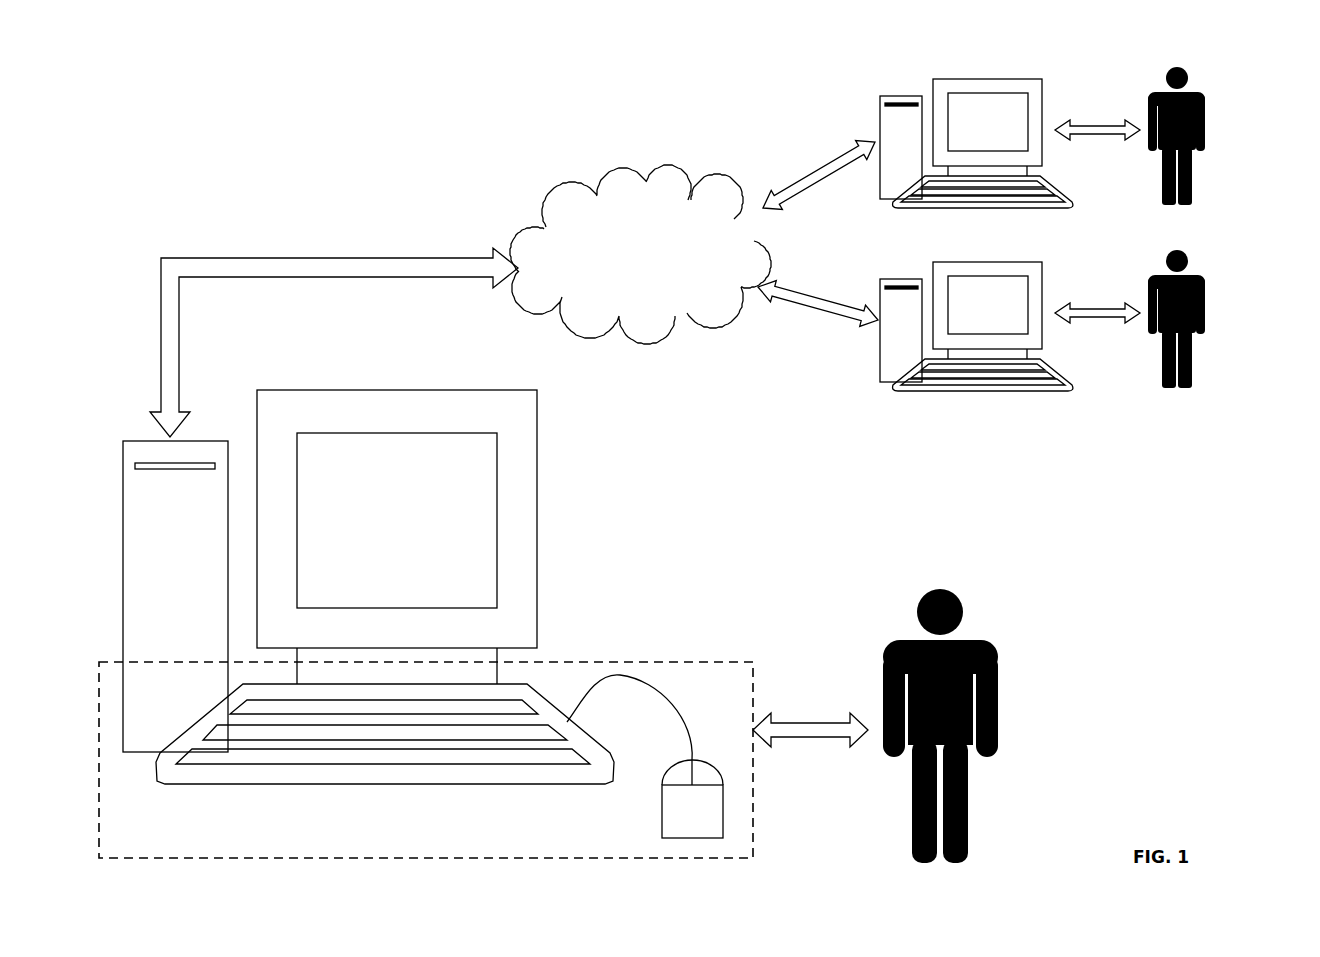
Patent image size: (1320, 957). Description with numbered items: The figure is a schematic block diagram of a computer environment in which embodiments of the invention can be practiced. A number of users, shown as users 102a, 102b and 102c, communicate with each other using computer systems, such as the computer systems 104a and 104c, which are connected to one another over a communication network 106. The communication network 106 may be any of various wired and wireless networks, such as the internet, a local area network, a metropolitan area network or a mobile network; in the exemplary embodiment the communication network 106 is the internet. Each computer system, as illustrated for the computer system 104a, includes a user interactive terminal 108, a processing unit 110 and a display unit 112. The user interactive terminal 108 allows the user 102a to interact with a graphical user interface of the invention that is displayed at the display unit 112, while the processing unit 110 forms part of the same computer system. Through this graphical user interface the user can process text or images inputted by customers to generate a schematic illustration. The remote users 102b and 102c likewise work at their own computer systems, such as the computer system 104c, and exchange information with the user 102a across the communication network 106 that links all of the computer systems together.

The user 102a is at (1002, 728).
The user 102b is at (893, 72).
The user 102c is at (1207, 318).
The computer system 104a is at (632, 533).
The computer system 104c is at (918, 415).
The communication network 106 is at (647, 344).
The user interactive terminal 108 is at (617, 662).
The processing unit 110 is at (175, 596).
The display unit 112 is at (363, 390).